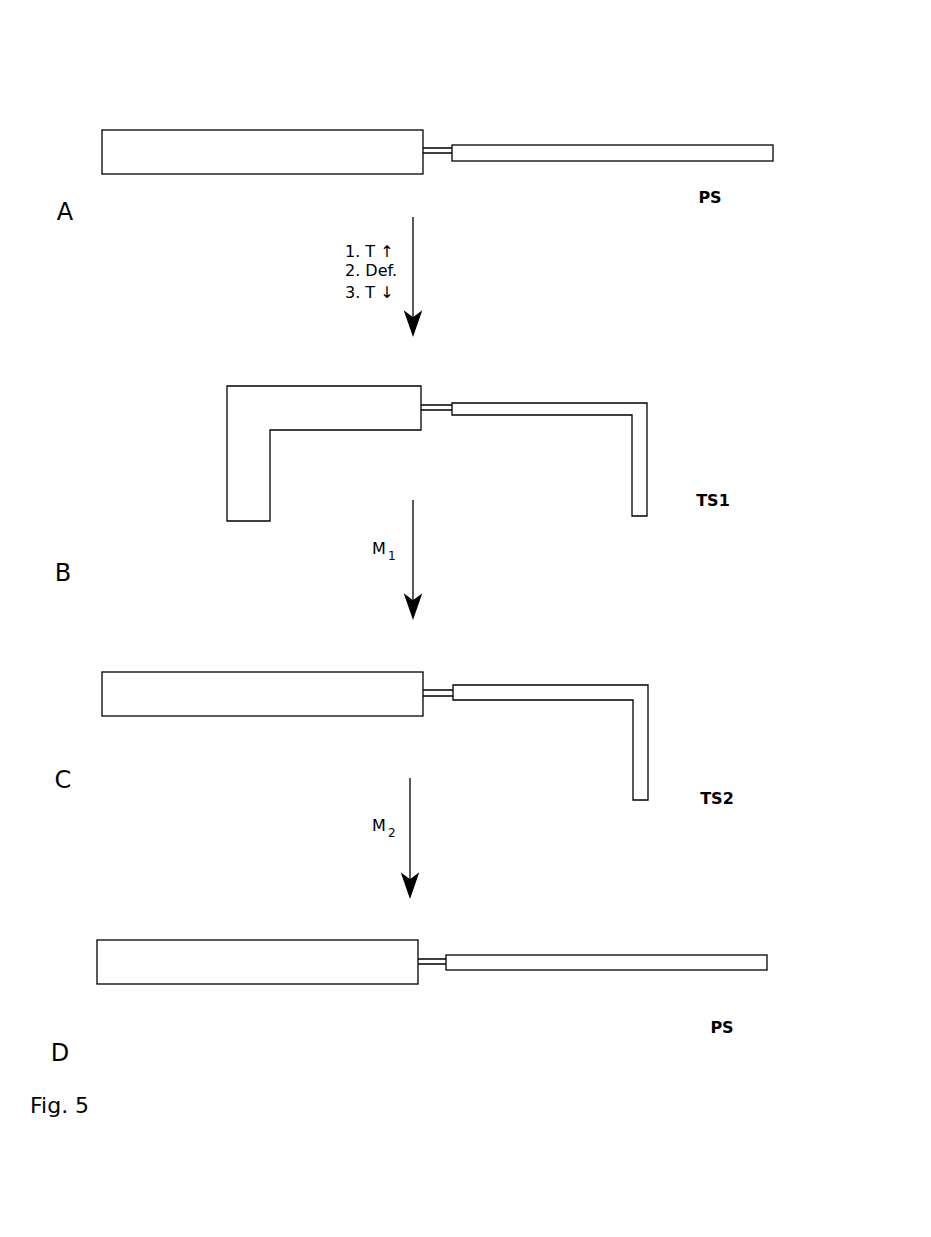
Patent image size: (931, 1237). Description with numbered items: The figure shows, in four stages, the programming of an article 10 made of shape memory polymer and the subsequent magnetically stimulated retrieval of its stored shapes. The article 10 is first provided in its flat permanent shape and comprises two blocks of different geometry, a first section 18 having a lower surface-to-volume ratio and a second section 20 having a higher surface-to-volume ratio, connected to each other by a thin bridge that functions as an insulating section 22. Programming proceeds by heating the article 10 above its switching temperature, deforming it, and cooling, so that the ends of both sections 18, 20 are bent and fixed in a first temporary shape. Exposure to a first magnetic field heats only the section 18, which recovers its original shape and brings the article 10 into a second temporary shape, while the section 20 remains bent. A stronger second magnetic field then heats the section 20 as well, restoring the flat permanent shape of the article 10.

The article 10 is at (437, 135).
The first section 18 is at (258, 183).
The second section 20 is at (543, 161).
The insulating section 22 is at (438, 162).